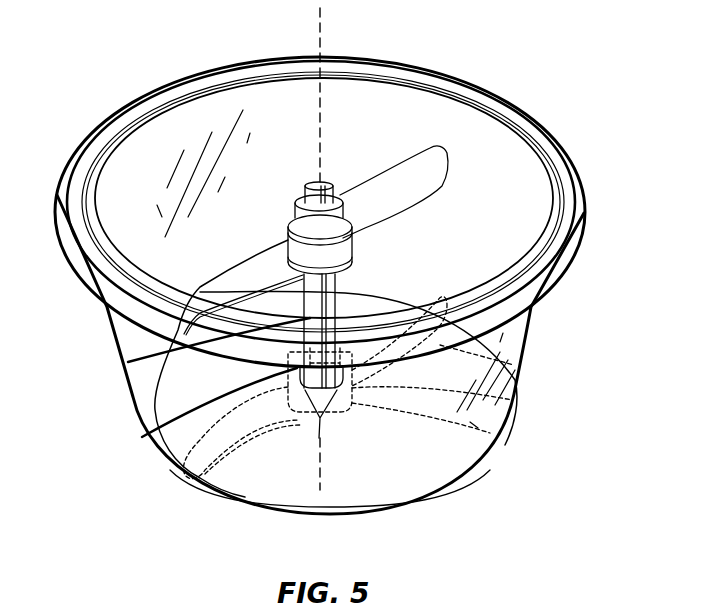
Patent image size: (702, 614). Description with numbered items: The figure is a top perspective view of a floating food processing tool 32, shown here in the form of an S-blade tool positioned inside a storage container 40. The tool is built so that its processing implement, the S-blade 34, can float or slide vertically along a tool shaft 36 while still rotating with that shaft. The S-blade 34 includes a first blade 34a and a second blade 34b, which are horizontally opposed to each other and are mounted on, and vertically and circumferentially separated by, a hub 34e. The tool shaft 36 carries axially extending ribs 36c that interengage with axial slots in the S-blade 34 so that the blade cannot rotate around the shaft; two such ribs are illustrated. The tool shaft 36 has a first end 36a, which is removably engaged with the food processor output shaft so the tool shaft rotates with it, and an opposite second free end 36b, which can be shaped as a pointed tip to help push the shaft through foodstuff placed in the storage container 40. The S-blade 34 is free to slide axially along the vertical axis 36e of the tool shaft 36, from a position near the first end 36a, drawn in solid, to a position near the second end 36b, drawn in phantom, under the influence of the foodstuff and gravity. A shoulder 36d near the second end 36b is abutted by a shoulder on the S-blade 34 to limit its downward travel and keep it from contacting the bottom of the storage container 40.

The floating food processing tool 32 is at (340, 284).
The S-blade 34 is at (290, 238).
The first blade 34a is at (210, 293).
The second blade 34b is at (431, 180).
The hub 34e is at (353, 248).
The tool shaft 36 is at (128, 362).
The first end 36a is at (326, 183).
The second free end 36b is at (320, 440).
The axially extending ribs 36c is at (312, 181).
The shoulder 36d is at (150, 431).
The vertical axis 36e is at (317, 27).
The storage container 40 is at (511, 338).